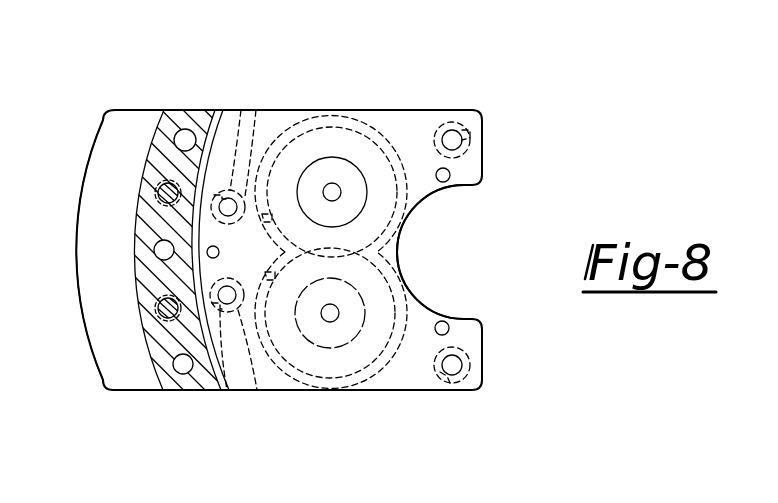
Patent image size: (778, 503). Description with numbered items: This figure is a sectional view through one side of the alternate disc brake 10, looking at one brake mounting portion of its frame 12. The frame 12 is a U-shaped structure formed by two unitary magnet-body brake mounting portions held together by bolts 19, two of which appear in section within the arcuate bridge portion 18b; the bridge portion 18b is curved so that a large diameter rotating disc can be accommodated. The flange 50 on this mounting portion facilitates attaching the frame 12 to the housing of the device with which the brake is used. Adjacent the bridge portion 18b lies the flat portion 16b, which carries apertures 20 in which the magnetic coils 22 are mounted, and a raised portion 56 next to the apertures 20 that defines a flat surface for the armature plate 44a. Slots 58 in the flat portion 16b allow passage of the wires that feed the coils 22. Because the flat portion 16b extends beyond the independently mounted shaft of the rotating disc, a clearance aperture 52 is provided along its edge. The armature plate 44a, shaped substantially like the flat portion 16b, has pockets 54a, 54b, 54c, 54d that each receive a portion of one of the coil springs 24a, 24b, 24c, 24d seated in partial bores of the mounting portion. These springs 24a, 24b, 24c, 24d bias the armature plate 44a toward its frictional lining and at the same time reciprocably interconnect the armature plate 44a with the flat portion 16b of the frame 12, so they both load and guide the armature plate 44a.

The disc brake 10 is at (498, 111).
The frame 12 is at (143, 110).
The flat portion 16b is at (212, 108).
The bridge portion 18b is at (179, 108).
The bolts 19 is at (158, 192).
The apertures 20 is at (316, 127).
The magnetic coils 22 is at (386, 137).
The coil spring 24a is at (257, 392).
The coil spring 24b is at (486, 377).
The coil spring 24c is at (259, 110).
The coil spring 24d is at (486, 143).
The armature plate 44a is at (426, 379).
The flange 50 is at (121, 263).
The clearance aperture 52 is at (423, 307).
The pocket 54a is at (229, 392).
The pocket 54b is at (445, 390).
The pocket 54c is at (243, 110).
The pocket 54d is at (450, 122).
The raised portion 56 is at (340, 117).
The slots 58 is at (272, 220).